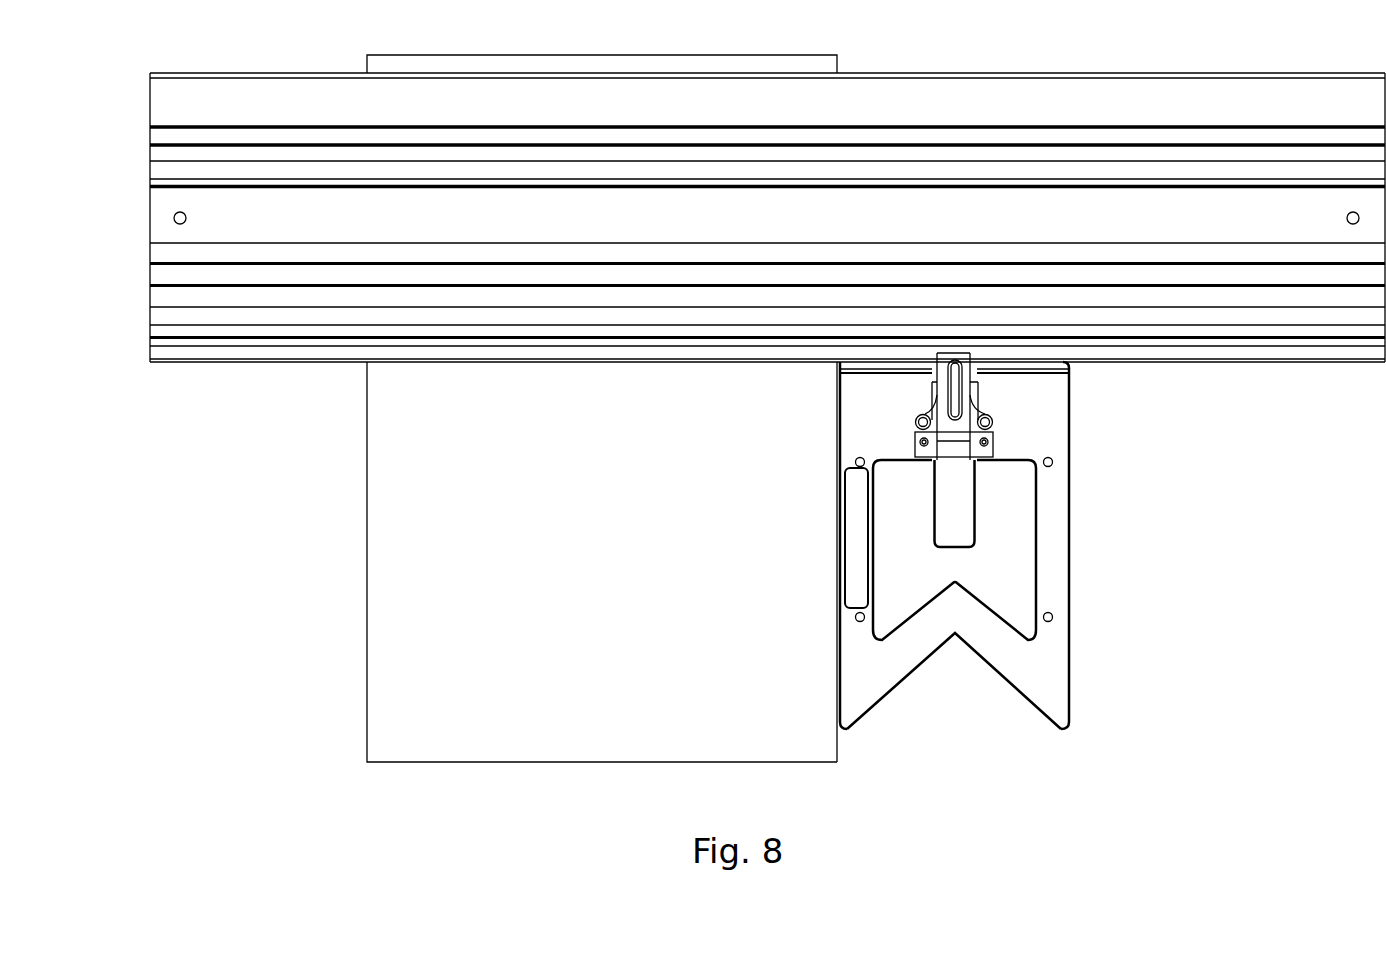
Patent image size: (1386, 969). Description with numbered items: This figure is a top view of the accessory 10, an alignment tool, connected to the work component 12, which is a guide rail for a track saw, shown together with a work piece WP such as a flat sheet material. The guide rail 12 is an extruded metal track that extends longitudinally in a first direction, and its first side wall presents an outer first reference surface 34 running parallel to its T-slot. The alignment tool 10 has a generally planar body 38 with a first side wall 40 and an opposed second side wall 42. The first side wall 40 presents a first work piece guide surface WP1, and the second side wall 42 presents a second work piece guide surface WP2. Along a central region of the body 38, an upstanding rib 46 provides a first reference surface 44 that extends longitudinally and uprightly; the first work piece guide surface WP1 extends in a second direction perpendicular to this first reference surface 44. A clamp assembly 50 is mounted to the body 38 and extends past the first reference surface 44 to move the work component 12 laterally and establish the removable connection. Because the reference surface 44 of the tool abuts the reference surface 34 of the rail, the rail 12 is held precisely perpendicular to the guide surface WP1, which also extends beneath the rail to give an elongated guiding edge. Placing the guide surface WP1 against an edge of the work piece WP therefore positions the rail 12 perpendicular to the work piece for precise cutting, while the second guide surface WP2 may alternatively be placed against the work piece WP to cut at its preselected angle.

The accessory 10 is at (978, 415).
The work component 12 is at (1268, 364).
The first reference surface 34 is at (1215, 363).
The body 38 is at (1057, 692).
The first side wall 40 is at (839, 708).
The second side wall 42 is at (1071, 572).
The first reference surface 44 is at (1012, 360).
The upstanding rib 46 is at (1045, 370).
The clamp assembly 50 is at (982, 393).
The work piece WP is at (508, 764).
The first work piece guide surface WP1 is at (838, 668).
The second work piece guide surface WP2 is at (1071, 656).